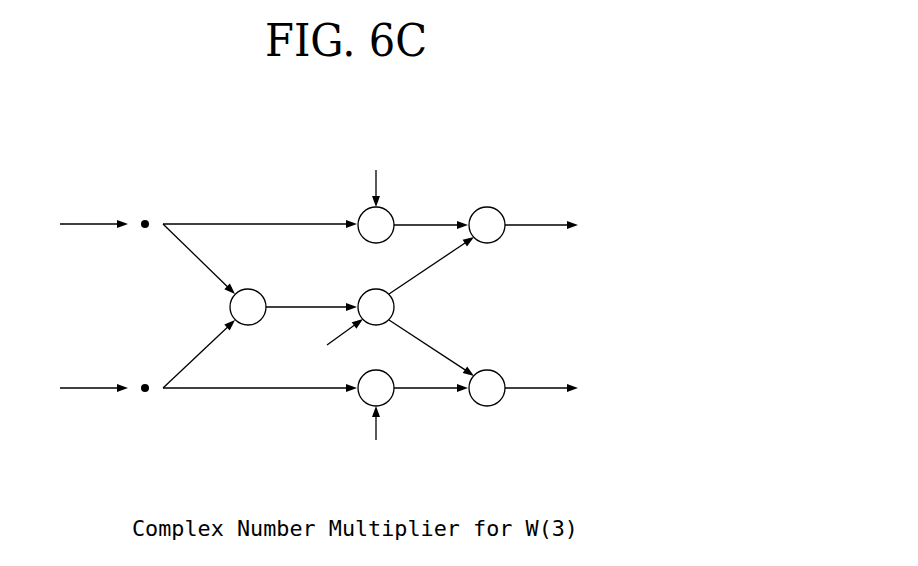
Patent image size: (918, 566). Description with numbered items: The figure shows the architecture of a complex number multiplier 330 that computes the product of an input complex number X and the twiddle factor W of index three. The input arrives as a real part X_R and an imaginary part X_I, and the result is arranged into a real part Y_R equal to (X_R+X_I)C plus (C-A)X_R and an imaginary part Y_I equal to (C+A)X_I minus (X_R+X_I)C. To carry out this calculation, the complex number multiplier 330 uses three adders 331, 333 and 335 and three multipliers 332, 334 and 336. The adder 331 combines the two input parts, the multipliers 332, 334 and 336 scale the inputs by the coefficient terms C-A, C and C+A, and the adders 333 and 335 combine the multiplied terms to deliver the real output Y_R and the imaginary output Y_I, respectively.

The complex number multiplier 330 is at (579, 128).
The adder 331 is at (247, 289).
The multiplier 332 is at (385, 209).
The adder 333 is at (492, 207).
The multiplier 334 is at (394, 306).
The adder 335 is at (492, 370).
The multiplier 336 is at (387, 403).